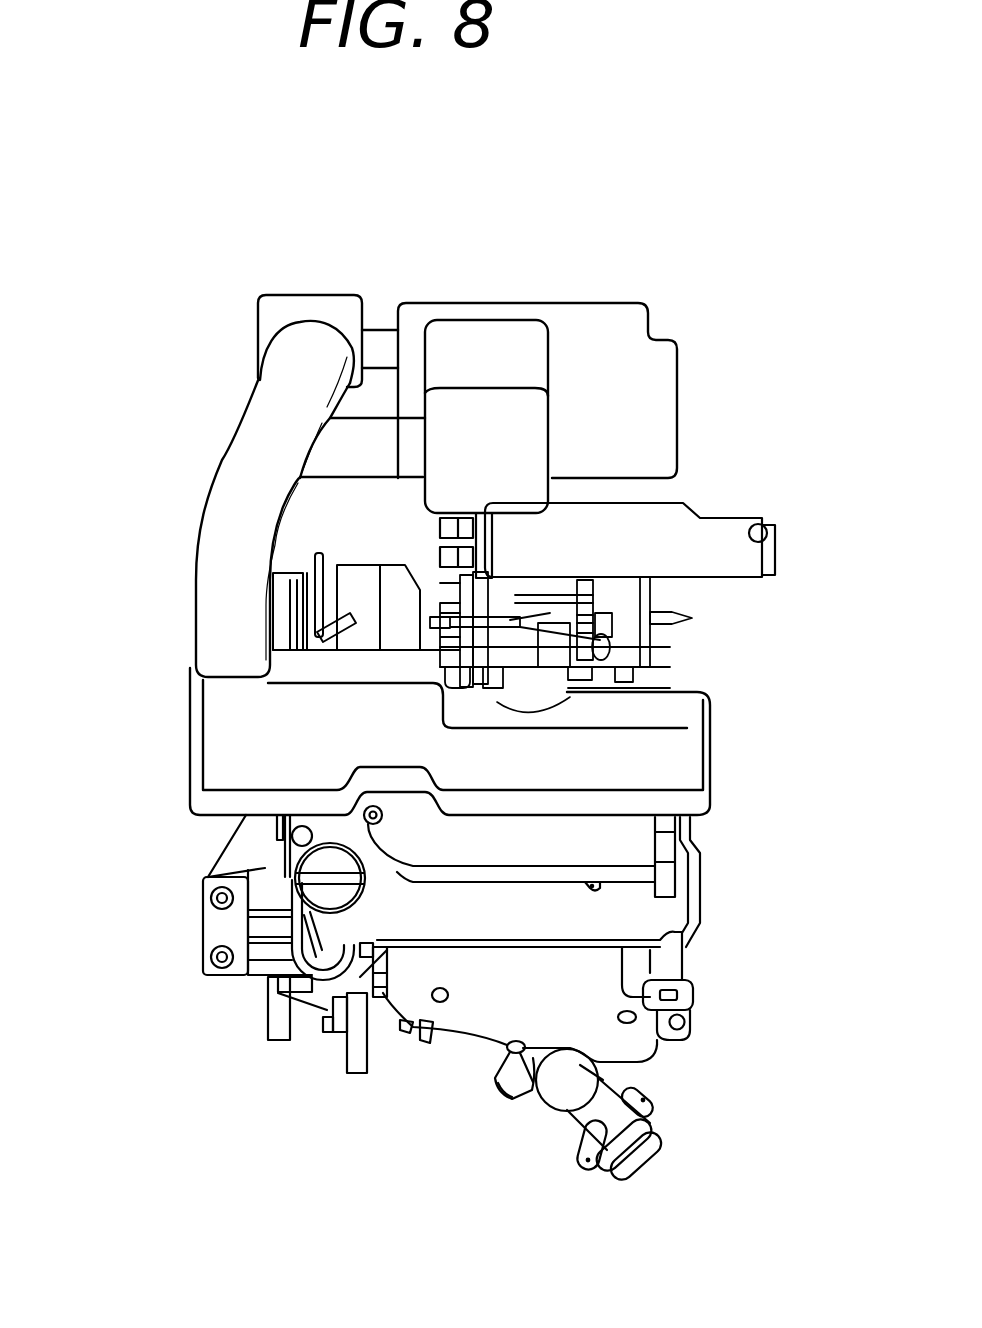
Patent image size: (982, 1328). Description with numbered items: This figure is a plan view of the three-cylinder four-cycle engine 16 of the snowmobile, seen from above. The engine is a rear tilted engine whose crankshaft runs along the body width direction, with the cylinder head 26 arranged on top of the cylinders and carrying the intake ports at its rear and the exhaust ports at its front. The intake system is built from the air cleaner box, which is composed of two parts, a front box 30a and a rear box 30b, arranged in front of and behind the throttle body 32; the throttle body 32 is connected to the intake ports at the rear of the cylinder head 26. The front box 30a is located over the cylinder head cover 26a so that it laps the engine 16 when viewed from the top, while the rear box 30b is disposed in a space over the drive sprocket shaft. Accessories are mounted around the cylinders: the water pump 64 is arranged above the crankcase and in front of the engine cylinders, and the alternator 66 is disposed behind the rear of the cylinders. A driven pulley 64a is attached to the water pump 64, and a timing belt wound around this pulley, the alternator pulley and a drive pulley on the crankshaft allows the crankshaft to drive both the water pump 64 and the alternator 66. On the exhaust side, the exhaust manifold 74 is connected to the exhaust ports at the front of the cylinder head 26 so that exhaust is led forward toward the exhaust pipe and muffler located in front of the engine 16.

The four-cycle engine 16 is at (648, 847).
The cylinder head 26 is at (568, 908).
The cylinder head cover 26a is at (648, 903).
The front box 30a is at (228, 723).
The rear box 30b is at (450, 307).
The throttle body 32 is at (650, 637).
The water pump 64 is at (323, 993).
The driven pulley 64a is at (268, 998).
The alternator 66 is at (360, 590).
The exhaust manifold 74 is at (603, 1077).